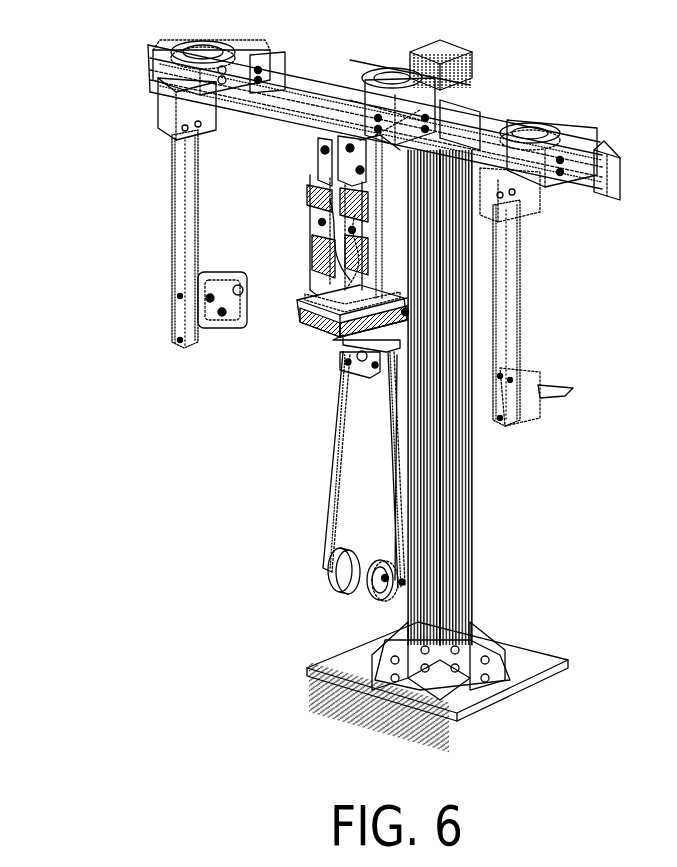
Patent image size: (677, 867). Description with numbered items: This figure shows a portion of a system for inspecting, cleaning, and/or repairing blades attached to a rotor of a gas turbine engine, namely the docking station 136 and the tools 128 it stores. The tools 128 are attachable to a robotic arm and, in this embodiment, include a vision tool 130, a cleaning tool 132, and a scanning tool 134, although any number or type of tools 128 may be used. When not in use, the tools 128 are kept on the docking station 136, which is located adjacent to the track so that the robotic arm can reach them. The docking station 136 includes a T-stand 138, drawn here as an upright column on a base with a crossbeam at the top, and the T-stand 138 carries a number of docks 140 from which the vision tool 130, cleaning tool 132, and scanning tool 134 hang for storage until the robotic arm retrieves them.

The tools 128 is at (337, 623).
The vision tool 130 is at (168, 213).
The cleaning tool 132 is at (330, 355).
The scanning tool 134 is at (545, 297).
The docking station 136 is at (473, 65).
The T-stand 138 is at (471, 397).
The docks 140 is at (391, 100).